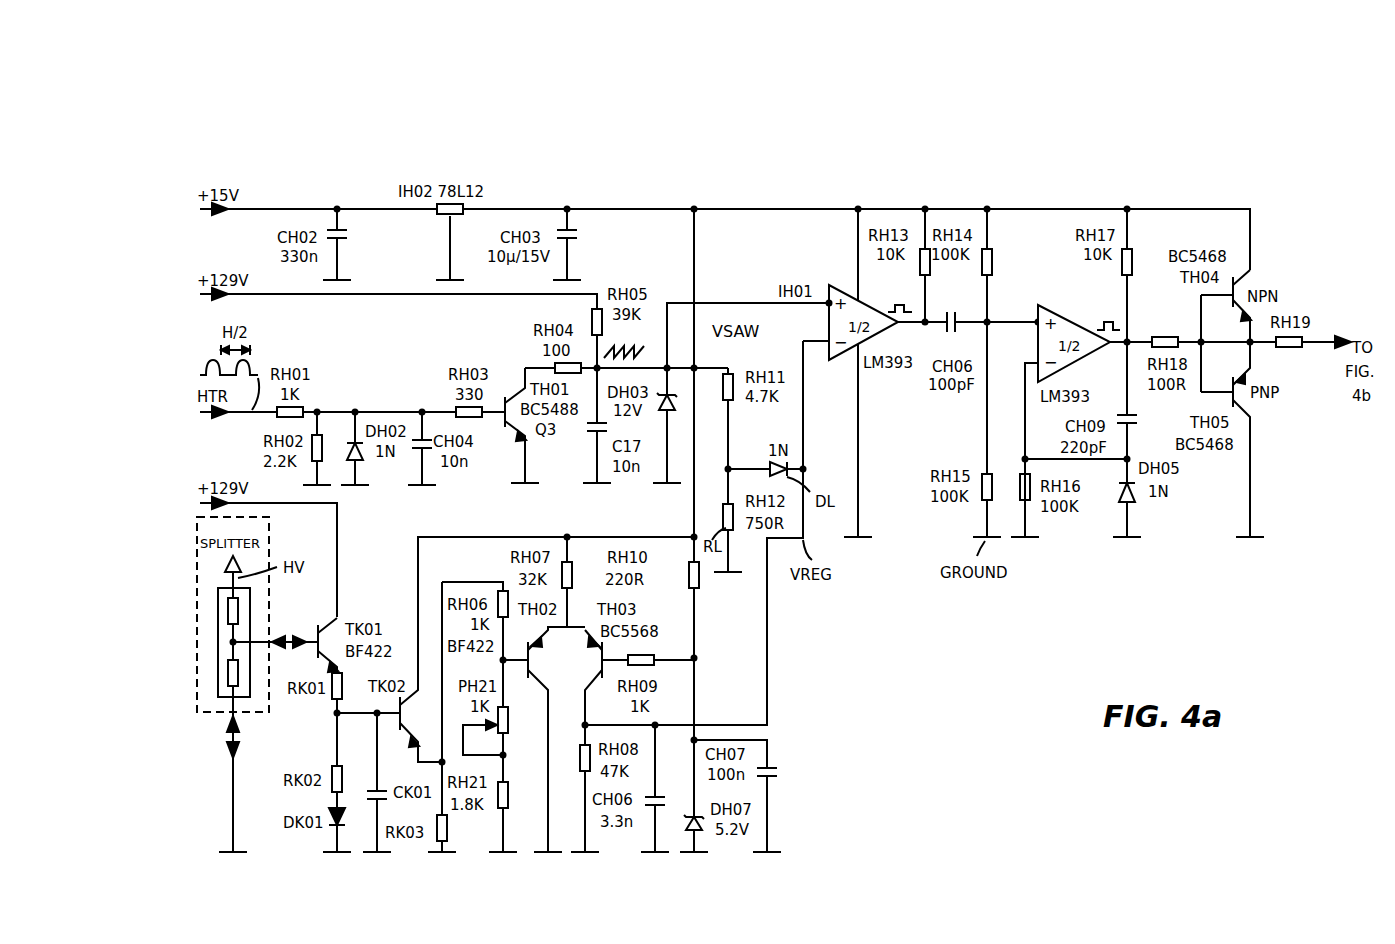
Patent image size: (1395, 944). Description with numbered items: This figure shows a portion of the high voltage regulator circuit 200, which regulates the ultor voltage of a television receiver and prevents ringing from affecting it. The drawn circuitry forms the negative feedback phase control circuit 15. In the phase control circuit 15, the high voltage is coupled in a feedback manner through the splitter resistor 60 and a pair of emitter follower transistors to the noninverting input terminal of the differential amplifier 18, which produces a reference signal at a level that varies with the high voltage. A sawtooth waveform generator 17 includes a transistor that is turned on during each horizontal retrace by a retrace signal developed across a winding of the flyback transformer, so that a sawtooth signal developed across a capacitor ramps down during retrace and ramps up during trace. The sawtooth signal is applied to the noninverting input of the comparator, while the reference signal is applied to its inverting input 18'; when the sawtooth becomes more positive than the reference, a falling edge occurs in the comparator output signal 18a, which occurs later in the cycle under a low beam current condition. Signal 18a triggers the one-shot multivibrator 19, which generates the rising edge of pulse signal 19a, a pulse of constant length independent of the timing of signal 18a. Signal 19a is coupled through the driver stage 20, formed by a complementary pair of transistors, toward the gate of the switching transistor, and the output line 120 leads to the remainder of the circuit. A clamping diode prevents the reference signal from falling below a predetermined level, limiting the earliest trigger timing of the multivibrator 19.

The negative feedback phase control circuit 15 is at (957, 495).
The sawtooth waveform generator 17 is at (518, 403).
The differential amplifier 18 is at (565, 694).
The comparator inverting input 18' is at (824, 372).
The output signal 18a is at (922, 318).
The one-shot multivibrator 19 is at (1071, 326).
The output signal 19a is at (1116, 348).
The driver stage 20 is at (1232, 403).
The splitter resistor 60 is at (250, 700).
The output resistor RH19 to FIG. 4b 120 is at (1313, 331).
The high voltage regulator circuit 200 is at (920, 816).